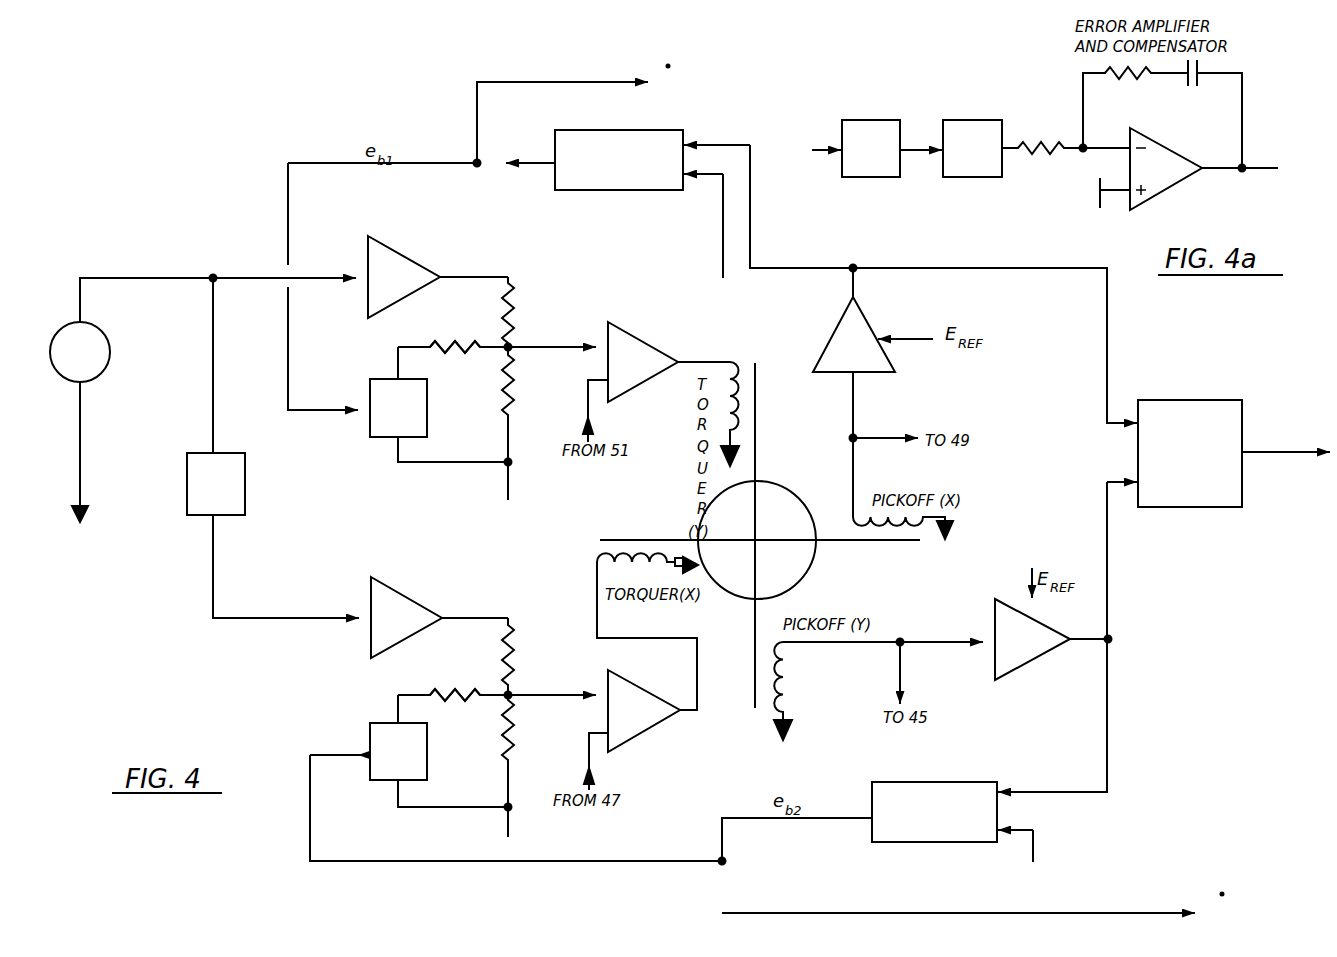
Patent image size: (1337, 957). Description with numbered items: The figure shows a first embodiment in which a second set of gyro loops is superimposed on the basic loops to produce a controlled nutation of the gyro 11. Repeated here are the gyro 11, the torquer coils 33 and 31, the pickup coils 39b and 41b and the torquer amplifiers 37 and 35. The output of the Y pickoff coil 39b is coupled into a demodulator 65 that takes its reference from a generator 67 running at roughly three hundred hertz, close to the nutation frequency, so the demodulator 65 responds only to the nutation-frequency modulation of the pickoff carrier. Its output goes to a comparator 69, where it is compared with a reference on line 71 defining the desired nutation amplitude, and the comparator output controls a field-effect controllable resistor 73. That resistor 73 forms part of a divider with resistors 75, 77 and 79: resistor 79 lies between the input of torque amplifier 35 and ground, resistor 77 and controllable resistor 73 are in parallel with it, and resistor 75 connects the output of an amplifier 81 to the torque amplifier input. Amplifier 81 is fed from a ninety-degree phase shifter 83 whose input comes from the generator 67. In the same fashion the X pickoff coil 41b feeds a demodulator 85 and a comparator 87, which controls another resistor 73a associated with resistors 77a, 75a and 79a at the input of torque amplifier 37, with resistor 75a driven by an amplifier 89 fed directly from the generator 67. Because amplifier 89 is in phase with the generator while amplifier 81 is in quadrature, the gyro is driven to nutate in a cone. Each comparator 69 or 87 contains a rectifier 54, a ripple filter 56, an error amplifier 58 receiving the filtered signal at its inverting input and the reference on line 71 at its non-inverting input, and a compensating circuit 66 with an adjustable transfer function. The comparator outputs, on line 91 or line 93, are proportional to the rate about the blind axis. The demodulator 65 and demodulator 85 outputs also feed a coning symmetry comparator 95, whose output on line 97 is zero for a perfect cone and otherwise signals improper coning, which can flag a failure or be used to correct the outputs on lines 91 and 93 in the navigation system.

In FIG. 4, the gyro 11 is at (775, 482).
In FIG. 4, the torquer coil 31 is at (630, 547).
In FIG. 4, the torquer coil 33 is at (745, 363).
In FIG. 4, the torque amplifier 35 is at (650, 732).
In FIG. 4, the torque amplifier 37 is at (648, 332).
In FIG. 4, the Y pickoff coil 39b is at (790, 680).
In FIG. 4, the X pickoff coil 41b is at (903, 545).
In FIG. 4A, the rectifier 54 is at (877, 178).
In FIG. 4A, the ripple filter 56 is at (993, 178).
In FIG. 4A, the error amplifier 58 is at (1172, 188).
In FIG. 4, the demodulator 65 is at (1025, 665).
In FIG. 4A, the compensating circuit 66 is at (1045, 137).
In FIG. 4, the generator 67 is at (97, 320).
In FIG. 4, the comparator 69 is at (968, 782).
In FIG. 4, the reference input line 71 is at (723, 232).
In FIG. 4A, the reference input line 71 is at (1100, 180).
In FIG. 4, the controllable resistor 73 is at (368, 735).
In FIG. 4, the controllable resistor 73a is at (368, 430).
In FIG. 4, the resistor 75 is at (515, 668).
In FIG. 4, the resistor 75a is at (514, 312).
In FIG. 4, the resistor 77 is at (455, 688).
In FIG. 4, the resistor 77a is at (440, 342).
In FIG. 4, the resistor 79 is at (500, 745).
In FIG. 4, the resistor 79a is at (500, 383).
In FIG. 4, the amplifier 81 is at (407, 594).
In FIG. 4, the 90° phase shifter 83 is at (245, 520).
In FIG. 4, the demodulator 85 is at (872, 322).
In FIG. 4, the comparator 87 is at (603, 191).
In FIG. 4, the amplifier 89 is at (404, 257).
In FIG. 4, the output line 91 is at (562, 84).
In FIG. 4, the output line 93 is at (917, 905).
In FIG. 4, the coning symmetry comparator 95 is at (1188, 398).
In FIG. 4, the output line 97 is at (1245, 452).